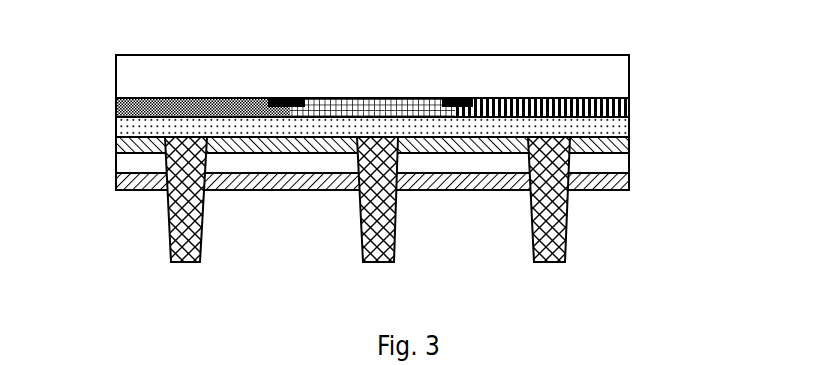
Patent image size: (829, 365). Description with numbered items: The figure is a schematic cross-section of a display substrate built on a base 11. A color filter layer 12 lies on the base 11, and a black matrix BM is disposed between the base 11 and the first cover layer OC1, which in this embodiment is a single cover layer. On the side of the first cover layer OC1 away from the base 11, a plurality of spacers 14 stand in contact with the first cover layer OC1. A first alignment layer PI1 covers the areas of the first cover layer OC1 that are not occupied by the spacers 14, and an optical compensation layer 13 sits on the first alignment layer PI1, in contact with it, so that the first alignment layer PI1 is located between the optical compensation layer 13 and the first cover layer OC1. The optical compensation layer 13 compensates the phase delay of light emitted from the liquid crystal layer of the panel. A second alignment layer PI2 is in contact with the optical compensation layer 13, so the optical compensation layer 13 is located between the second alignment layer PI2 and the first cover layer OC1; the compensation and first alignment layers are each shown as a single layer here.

The base 11 is at (115, 78).
The color filter layer 12 is at (102, 107).
The black matrix BM is at (287, 99).
The first cover layer OC1 is at (629, 127).
The first alignment layer PI1 is at (116, 143).
The optical compensation layer 13 is at (623, 166).
The second alignment layer PI2 is at (140, 184).
The spacer 14 is at (186, 247).